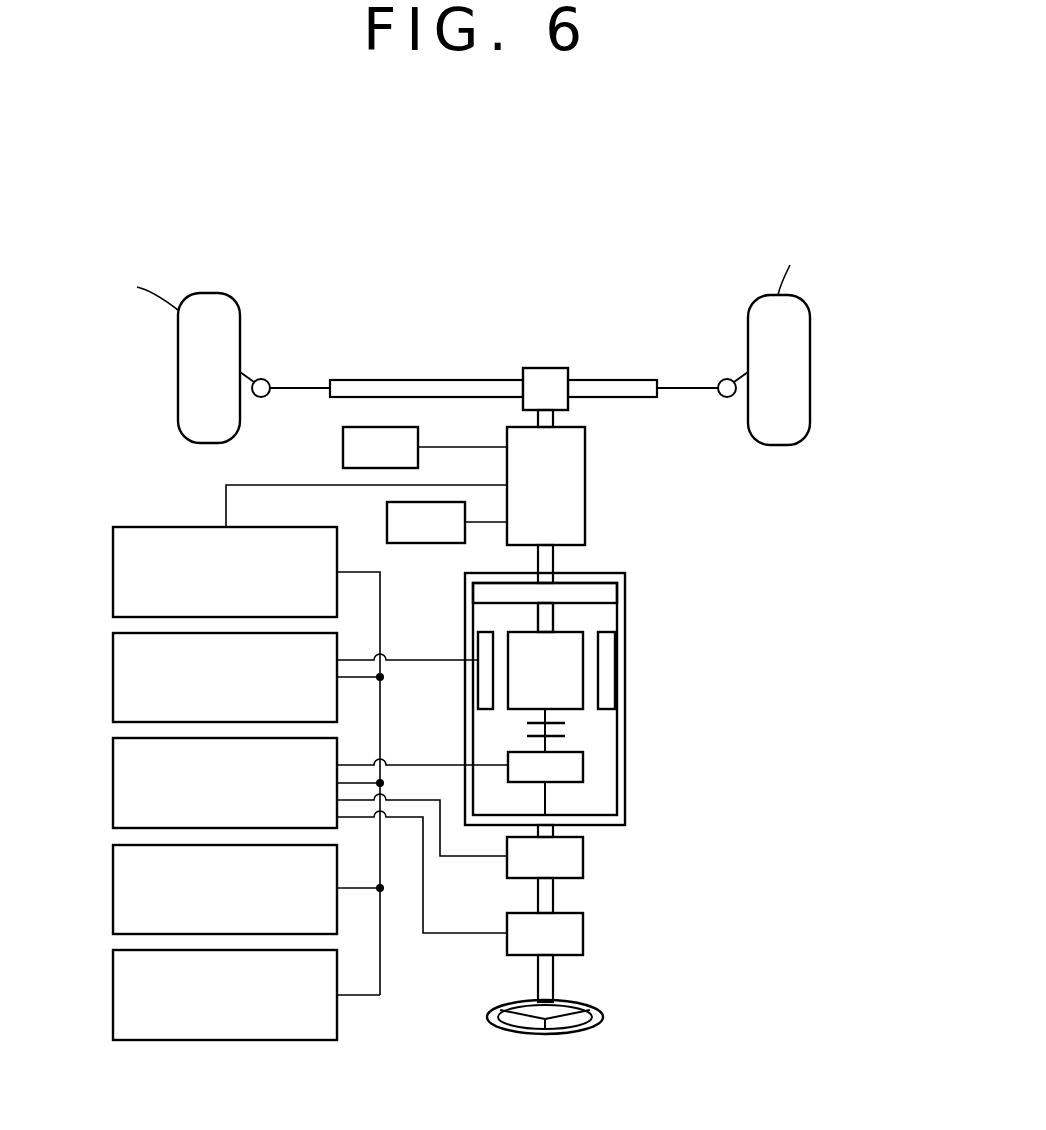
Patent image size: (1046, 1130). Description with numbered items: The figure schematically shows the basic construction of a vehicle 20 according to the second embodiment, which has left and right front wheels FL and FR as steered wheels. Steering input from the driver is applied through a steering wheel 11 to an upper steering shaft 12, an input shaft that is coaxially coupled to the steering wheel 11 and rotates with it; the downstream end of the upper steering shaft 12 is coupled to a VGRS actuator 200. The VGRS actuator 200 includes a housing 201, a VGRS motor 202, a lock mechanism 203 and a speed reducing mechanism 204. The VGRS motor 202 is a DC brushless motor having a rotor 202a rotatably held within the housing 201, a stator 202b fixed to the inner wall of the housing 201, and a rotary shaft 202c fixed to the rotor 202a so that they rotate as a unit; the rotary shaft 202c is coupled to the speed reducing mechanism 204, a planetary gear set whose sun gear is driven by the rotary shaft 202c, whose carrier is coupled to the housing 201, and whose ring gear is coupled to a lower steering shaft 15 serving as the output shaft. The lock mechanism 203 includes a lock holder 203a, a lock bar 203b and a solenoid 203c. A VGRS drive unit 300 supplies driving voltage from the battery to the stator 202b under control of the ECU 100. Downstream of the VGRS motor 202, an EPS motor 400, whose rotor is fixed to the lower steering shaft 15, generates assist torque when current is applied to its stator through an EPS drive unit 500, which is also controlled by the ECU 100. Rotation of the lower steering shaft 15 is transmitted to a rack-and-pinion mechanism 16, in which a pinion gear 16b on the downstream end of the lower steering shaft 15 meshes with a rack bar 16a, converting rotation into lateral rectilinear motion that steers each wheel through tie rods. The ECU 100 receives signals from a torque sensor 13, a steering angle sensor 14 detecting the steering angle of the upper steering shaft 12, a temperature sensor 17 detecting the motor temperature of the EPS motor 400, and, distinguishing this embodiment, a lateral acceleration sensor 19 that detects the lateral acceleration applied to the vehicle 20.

The steering wheel 11 is at (494, 1025).
The upper steering shaft 12 is at (538, 978).
The torque sensor 13 is at (583, 933).
The steering angle sensor 14 is at (427, 543).
The lower steering shaft 15 is at (553, 560).
The rack-and-pinion mechanism 16 is at (482, 312).
The rack bar 16a is at (362, 380).
The pinion gear 16b is at (538, 368).
The temperature sensor 17 is at (342, 442).
The lateral acceleration sensor 19 is at (113, 993).
The vehicle 20 is at (623, 267).
The ECU 100 is at (113, 785).
The VGRS actuator 200 is at (642, 753).
The housing 201 is at (625, 820).
The VGRS motor 202 is at (642, 697).
The rotor 202a is at (555, 650).
The stator 202b is at (610, 688).
The rotary shaft 202c is at (553, 617).
The lock mechanism 203 is at (698, 771).
The lock holder 203a is at (560, 722).
The lock bar 203b is at (560, 738).
The solenoid 203c is at (583, 767).
The speed reducing mechanism 204 is at (613, 592).
The VGRS drive unit 300 is at (113, 677).
The EPS motor 400 is at (585, 483).
The EPS drive unit 500 is at (113, 572).